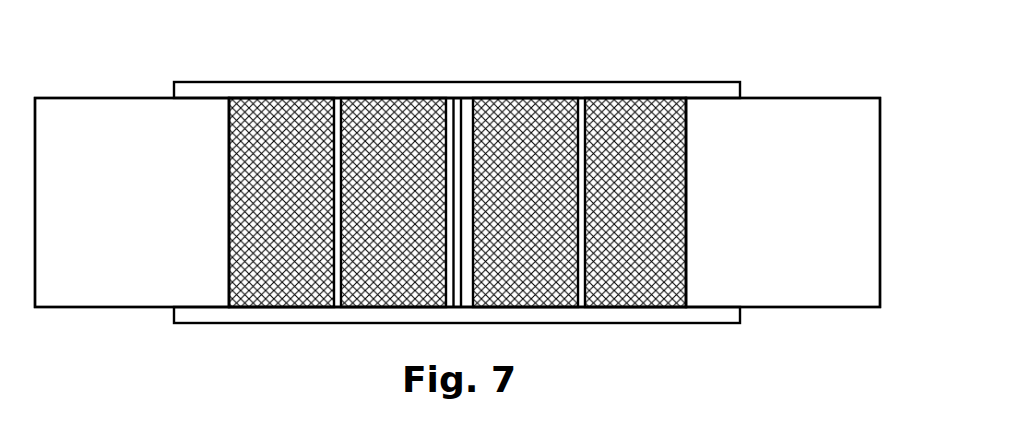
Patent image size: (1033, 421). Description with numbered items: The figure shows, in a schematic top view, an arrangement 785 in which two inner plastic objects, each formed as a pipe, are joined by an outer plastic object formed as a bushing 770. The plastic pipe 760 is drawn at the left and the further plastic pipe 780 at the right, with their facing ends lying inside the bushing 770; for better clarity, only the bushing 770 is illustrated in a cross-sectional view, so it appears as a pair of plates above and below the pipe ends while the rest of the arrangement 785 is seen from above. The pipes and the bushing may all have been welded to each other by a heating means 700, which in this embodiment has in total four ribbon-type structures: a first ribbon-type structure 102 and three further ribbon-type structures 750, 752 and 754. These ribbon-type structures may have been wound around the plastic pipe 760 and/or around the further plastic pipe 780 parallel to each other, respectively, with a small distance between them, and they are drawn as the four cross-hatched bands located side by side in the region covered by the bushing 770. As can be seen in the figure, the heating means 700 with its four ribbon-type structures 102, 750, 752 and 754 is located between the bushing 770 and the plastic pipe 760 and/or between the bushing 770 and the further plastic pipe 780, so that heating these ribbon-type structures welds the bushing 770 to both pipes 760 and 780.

The arrangement 785 is at (862, 58).
The outer plastic object formed as a bushing 770 is at (342, 82).
The plastic pipe 760 is at (128, 212).
The further plastic pipe 780 is at (754, 212).
The heating means 700 is at (707, 166).
The first ribbon-type structure 102 is at (264, 212).
The further ribbon-type structure 750 is at (374, 212).
The further ribbon-type structure 752 is at (506, 212).
The further ribbon-type structure 754 is at (616, 212).